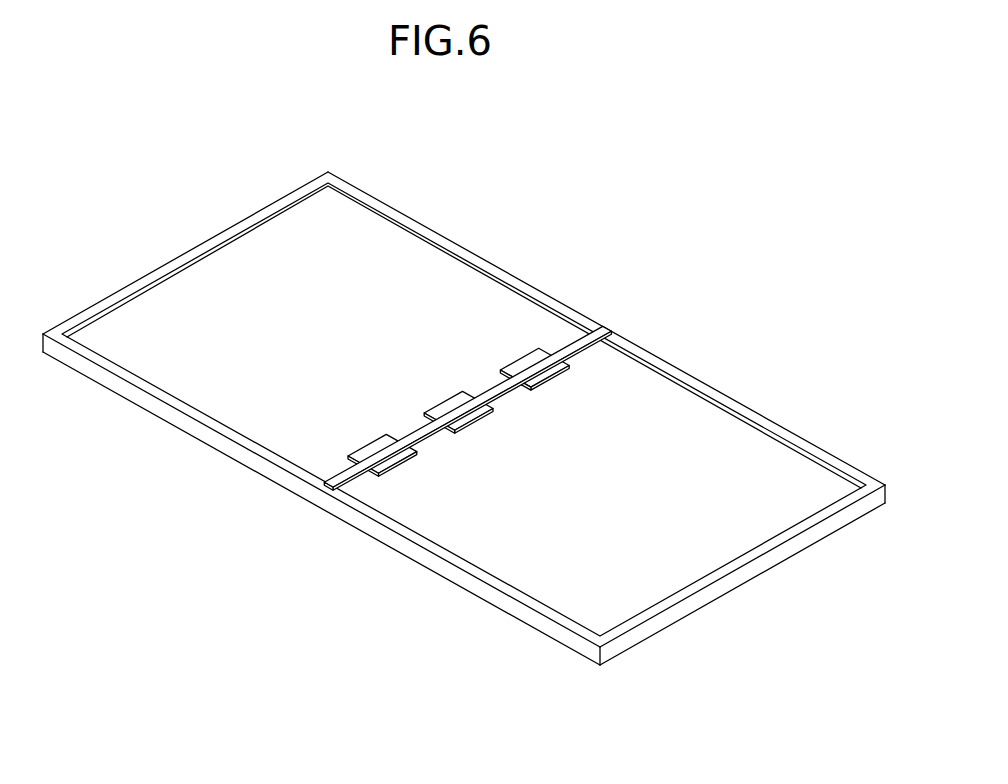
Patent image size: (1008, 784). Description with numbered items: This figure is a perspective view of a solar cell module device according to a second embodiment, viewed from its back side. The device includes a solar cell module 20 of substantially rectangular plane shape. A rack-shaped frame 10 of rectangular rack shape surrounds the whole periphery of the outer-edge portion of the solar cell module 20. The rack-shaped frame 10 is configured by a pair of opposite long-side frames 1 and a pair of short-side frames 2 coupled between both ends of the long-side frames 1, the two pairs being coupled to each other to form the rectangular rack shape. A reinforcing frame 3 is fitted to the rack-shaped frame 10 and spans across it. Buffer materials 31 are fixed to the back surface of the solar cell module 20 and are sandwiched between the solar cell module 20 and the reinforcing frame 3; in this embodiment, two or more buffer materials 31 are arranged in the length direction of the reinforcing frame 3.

The long-side frame 1 is at (478, 256).
The short-side frame 2 is at (193, 249).
The reinforcing frame 3 is at (577, 345).
The rack-shaped frame 10 is at (397, 211).
The solar cell module 20 is at (620, 608).
The buffer material 31 is at (408, 461).